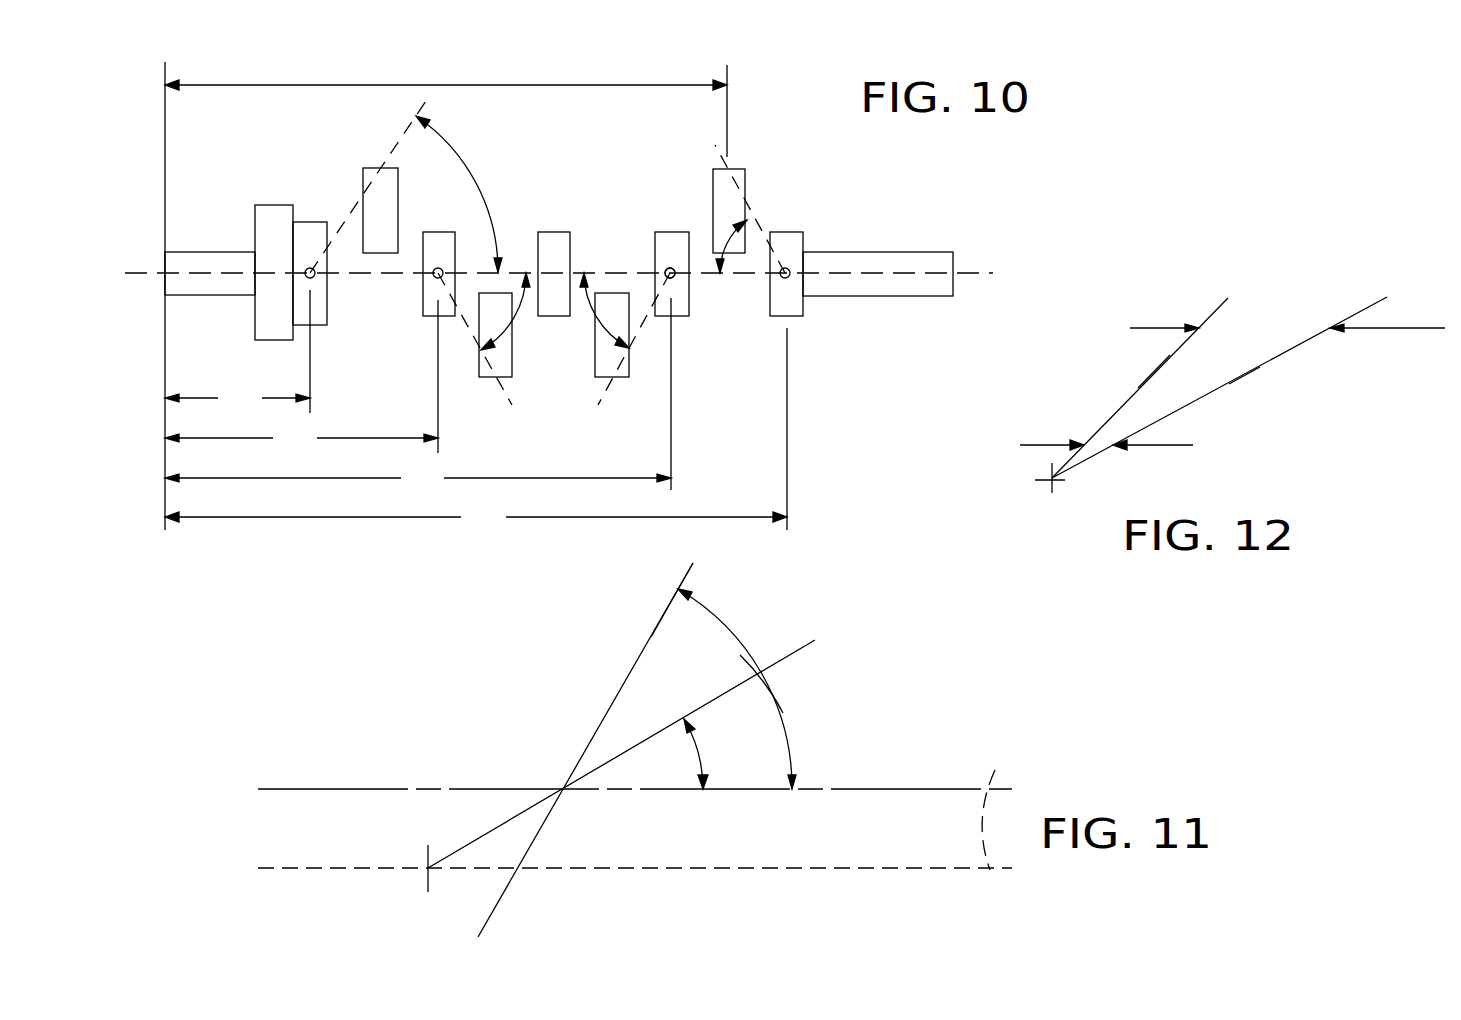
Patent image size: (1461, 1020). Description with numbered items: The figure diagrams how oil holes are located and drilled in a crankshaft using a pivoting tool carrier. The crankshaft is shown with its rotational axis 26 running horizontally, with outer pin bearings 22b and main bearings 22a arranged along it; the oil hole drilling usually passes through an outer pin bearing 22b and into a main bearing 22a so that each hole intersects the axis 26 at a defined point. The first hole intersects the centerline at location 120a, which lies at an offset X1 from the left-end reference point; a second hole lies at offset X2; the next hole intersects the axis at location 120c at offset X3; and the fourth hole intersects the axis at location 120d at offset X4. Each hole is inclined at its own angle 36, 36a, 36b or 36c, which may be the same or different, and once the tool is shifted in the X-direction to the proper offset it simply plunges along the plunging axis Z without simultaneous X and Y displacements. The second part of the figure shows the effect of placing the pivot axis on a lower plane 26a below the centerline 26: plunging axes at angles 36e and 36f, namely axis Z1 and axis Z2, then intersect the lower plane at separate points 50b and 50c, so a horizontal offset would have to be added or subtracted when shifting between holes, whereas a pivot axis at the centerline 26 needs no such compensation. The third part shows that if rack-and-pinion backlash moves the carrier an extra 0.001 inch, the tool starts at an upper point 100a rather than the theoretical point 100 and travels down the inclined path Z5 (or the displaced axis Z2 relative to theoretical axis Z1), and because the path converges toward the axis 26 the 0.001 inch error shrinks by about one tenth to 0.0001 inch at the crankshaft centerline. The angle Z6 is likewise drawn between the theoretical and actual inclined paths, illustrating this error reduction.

In FIG. 10, the drill hole intersection location 120a is at (305, 270).
In FIG. 10, the drill hole intersection location 120c is at (673, 278).
In FIG. 10, the drill hole intersection location 120d is at (788, 266).
In FIG. 10, the main bearing 22a is at (423, 300).
In FIG. 10, the outer pin bearing 22b is at (388, 188).
In FIG. 10, the angle 36 is at (495, 222).
In FIG. 10, the angle 36a is at (512, 335).
In FIG. 10, the angle 36b is at (589, 303).
In FIG. 10, the angle 36c is at (742, 255).
In FIG. 11, the angle 36e is at (703, 752).
In FIG. 11, the angle 36f is at (783, 713).
In FIG. 10, the X-axis offset X1 is at (237, 398).
In FIG. 10, the X-axis offset X2 is at (301, 438).
In FIG. 10, the X-axis offset X3 is at (418, 478).
In FIG. 10, the X-axis offset X4 is at (476, 517).
In FIG. 10, the plunging axis Z is at (397, 147).
In FIG. 11, the theoretical plunging axis Z1 is at (651, 637).
In FIG. 11, the offset plunging axis Z2 is at (793, 645).
In FIG. 12, the inclined path Z5 is at (1229, 384).
In FIG. 12, the sixth angle Z6 is at (1138, 388).
In FIG. 11, the rotational axis 26 is at (945, 789).
In FIG. 12, the rotational axis 26 is at (1045, 482).
In FIG. 11, the lower pivot plane 26a is at (992, 767).
In FIG. 11, the intersection point 50b is at (517, 873).
In FIG. 11, the intersection point 50c is at (428, 866).
In FIG. 12, the theoretical point 100 is at (1197, 327).
In FIG. 12, the upper point 100a is at (1331, 330).
In FIG. 12, the X-axis error 0.001 is at (1120, 330).
In FIG. 12, the reduced error 0.0001 is at (1055, 445).